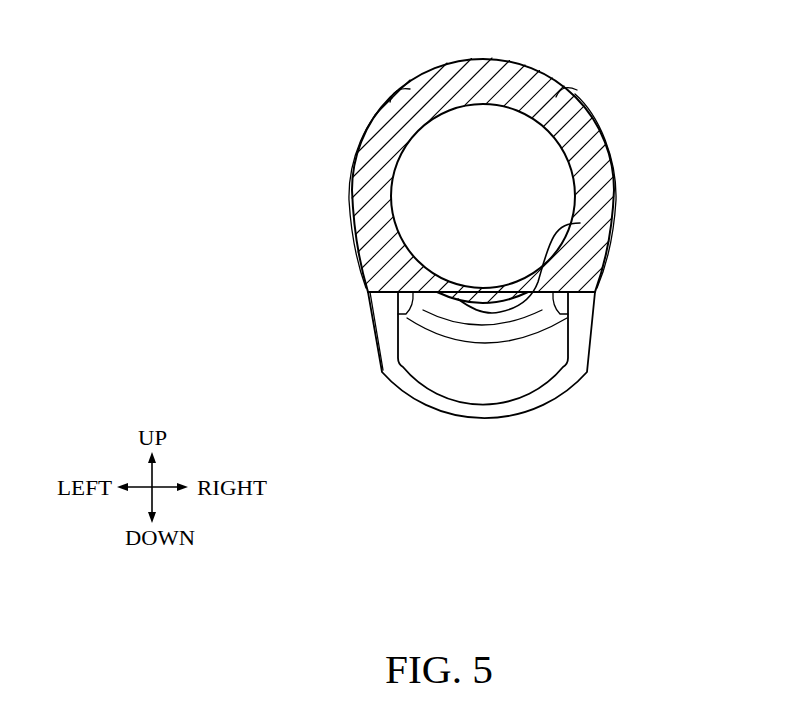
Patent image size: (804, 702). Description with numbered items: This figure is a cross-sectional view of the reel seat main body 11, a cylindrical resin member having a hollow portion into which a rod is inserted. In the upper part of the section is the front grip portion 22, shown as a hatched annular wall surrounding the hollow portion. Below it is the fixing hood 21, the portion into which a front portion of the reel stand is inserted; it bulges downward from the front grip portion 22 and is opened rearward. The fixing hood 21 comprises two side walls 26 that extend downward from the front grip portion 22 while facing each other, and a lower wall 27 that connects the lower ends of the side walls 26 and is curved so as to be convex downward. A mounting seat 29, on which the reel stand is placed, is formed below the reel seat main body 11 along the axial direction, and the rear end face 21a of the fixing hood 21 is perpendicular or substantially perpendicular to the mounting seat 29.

The reel seat main body 11 is at (456, 265).
The fixing hood 21 is at (479, 408).
The rear end face 21a is at (565, 380).
The front grip portion 22 is at (483, 58).
The side walls 26 is at (380, 343).
The lower wall 27 is at (453, 410).
The mounting seat 29 is at (580, 223).